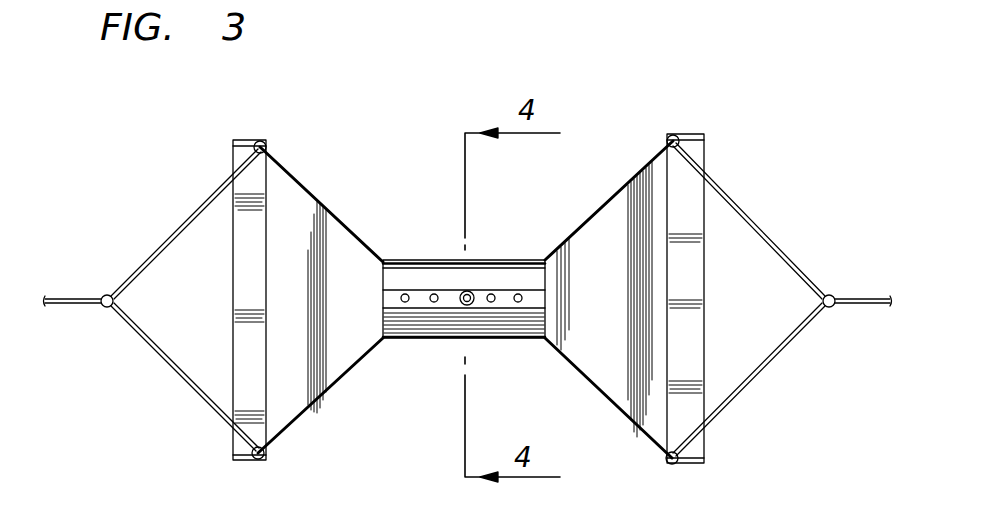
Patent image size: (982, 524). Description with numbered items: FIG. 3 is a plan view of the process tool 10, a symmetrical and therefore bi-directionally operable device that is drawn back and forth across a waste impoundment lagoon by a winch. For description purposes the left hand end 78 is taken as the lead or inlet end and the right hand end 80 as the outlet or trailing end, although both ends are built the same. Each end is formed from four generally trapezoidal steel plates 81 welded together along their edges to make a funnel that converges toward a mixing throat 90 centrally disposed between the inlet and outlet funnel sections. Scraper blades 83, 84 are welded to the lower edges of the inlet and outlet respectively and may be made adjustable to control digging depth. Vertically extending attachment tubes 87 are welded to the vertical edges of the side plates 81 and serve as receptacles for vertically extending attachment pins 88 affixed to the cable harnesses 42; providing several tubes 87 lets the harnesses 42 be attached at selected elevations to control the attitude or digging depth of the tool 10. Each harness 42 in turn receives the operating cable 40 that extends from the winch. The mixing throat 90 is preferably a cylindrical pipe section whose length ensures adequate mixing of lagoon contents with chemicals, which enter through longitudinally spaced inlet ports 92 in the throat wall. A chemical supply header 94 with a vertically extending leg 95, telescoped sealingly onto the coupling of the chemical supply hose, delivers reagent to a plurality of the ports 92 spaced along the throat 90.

The process tool 10 is at (752, 107).
The operating cable 40 is at (856, 300).
The cable harness 42 is at (784, 248).
The left hand end 78 is at (238, 156).
The right hand end 80 is at (688, 243).
The trapezoidal steel plates 81 is at (330, 226).
The scraper blade 83 is at (240, 387).
The scraper blade 84 is at (693, 456).
The attachment tubes 87 is at (263, 144).
The attachment pins 88 is at (258, 142).
The mixing throat 90 is at (518, 276).
The inlet ports 92 is at (402, 306).
The chemical supply header 94 is at (451, 304).
The vertically extending leg 95 is at (462, 290).